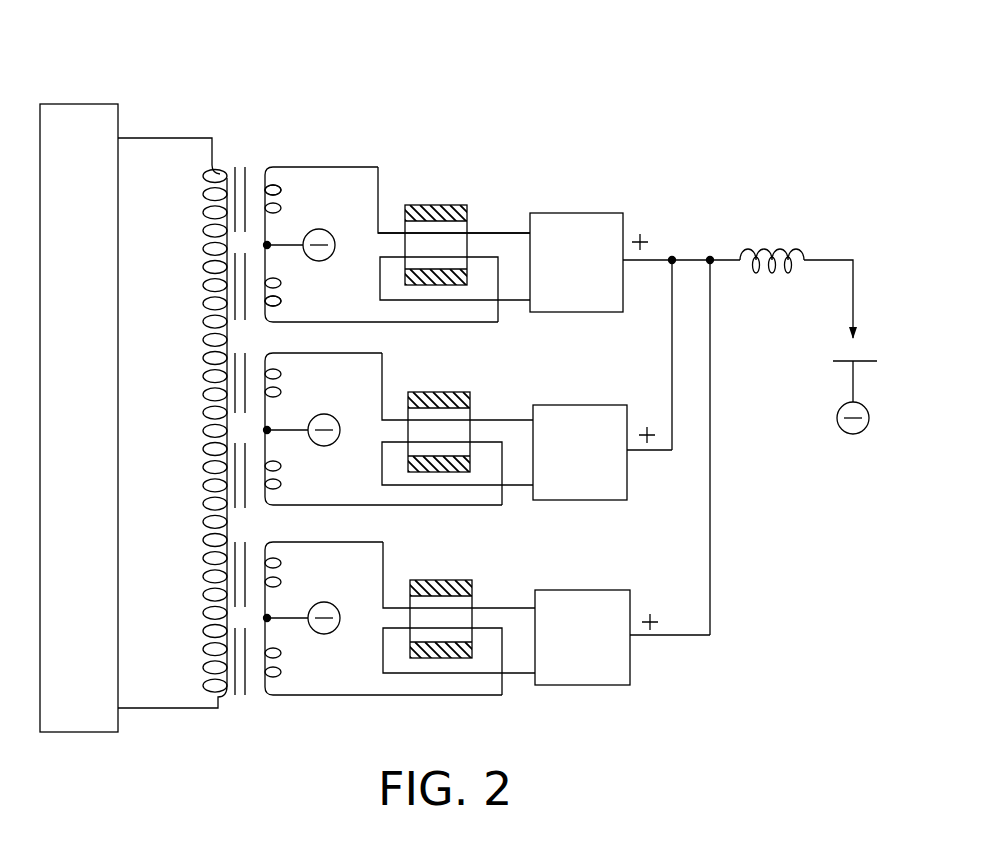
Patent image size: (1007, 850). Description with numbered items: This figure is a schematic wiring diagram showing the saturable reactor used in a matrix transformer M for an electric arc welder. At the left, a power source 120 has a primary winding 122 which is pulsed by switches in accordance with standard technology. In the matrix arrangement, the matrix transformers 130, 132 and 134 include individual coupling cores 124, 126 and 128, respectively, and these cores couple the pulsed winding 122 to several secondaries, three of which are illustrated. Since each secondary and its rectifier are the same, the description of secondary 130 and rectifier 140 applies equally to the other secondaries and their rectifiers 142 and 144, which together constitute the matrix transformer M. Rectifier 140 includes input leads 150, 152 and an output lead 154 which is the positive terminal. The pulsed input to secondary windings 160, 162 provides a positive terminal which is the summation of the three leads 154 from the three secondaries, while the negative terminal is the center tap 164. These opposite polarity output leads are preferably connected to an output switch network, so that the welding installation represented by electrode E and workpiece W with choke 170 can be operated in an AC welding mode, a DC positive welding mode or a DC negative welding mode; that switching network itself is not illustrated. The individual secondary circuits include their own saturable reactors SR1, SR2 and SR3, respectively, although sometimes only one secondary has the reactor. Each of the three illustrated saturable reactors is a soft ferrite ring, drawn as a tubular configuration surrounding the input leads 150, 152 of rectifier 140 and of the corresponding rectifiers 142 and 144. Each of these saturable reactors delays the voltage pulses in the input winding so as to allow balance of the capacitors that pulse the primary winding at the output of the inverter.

The power source 120 is at (66, 100).
The primary winding 122 is at (202, 402).
The matrix transformer M is at (232, 130).
The coupling core 124 is at (238, 165).
The coupling core 126 is at (243, 352).
The coupling core 128 is at (248, 536).
The matrix transformer secondary 130 is at (347, 160).
The matrix transformer secondary 132 is at (378, 348).
The matrix transformer secondary 134 is at (380, 535).
The rectifier 140 is at (580, 213).
The rectifier 142 is at (579, 405).
The rectifier 144 is at (580, 590).
The input lead 150 is at (507, 231).
The input lead 152 is at (516, 302).
The output lead 154 is at (651, 259).
The secondary winding 160 is at (270, 185).
The secondary winding 162 is at (273, 296).
The center tap 164 is at (287, 245).
The choke 170 is at (782, 248).
The saturable reactor SR1 is at (434, 204).
The saturable reactor SR2 is at (444, 391).
The saturable reactor SR3 is at (441, 578).
The electrode E is at (847, 342).
The workpiece W is at (842, 362).